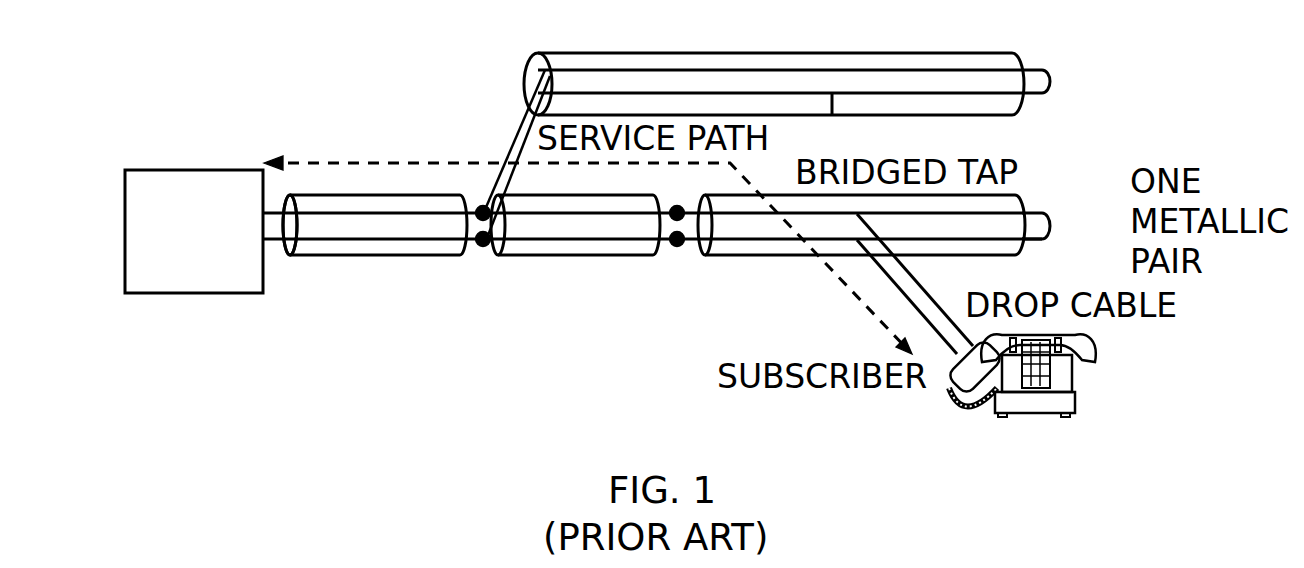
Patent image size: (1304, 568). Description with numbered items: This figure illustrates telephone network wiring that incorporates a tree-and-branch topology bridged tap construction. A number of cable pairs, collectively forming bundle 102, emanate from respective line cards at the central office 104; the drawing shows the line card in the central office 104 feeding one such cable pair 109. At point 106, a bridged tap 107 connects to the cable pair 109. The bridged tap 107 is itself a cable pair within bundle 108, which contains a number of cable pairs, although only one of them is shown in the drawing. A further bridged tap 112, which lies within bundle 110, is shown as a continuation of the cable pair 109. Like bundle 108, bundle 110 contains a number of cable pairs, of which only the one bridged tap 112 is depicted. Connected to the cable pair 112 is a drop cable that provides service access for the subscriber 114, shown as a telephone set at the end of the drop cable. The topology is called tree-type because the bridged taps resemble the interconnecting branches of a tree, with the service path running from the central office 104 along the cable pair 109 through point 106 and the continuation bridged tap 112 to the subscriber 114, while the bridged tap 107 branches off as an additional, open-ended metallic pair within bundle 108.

The bundle 102 is at (320, 194).
The central office 104 is at (110, 304).
The point 106 is at (489, 248).
The bridged tap 107 is at (843, 117).
The bundle 108 is at (524, 65).
The cable pair 109 is at (303, 256).
The bundle 110 is at (1026, 204).
The bridged tap 112 is at (1032, 243).
The subscriber 114 is at (1098, 358).